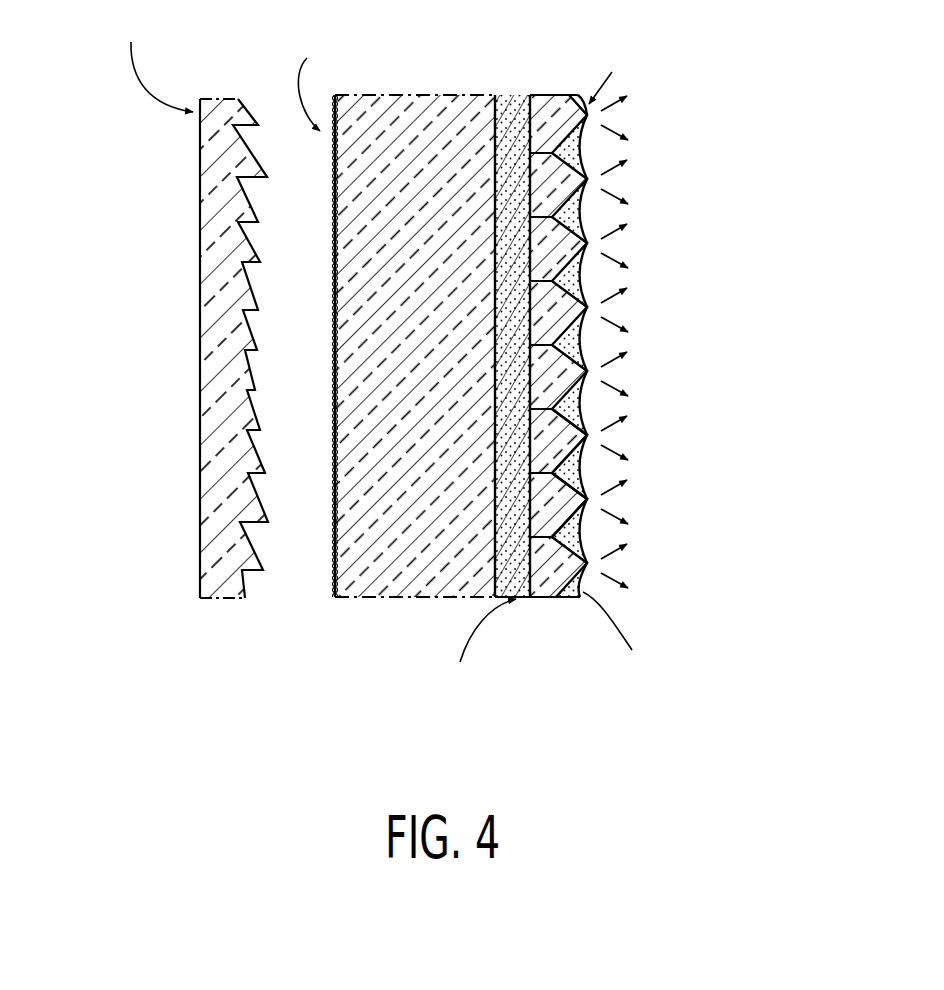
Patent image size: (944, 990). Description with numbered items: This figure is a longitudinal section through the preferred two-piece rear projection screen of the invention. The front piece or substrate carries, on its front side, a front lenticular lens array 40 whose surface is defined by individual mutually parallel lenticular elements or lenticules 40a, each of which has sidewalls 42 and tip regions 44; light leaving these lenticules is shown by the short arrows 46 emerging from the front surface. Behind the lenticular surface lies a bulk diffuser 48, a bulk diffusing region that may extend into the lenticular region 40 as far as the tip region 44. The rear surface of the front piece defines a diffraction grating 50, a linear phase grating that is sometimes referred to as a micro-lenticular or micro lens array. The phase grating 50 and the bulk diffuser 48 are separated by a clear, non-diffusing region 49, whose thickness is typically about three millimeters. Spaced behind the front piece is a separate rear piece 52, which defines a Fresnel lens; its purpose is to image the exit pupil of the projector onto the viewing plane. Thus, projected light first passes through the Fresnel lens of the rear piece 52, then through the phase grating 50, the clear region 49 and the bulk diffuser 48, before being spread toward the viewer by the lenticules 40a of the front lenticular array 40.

The rear piece 52 is at (190, 305).
The diffraction grating 50 is at (333, 578).
The clear region 49 is at (405, 567).
The bulk diffuser 48 is at (520, 95).
The front lenticular lens array 40 is at (552, 602).
The lenticular elements 40a is at (533, 97).
The output light rays 46 is at (603, 323).
The tip regions 44 is at (592, 426).
The sidewalls 42 is at (563, 497).